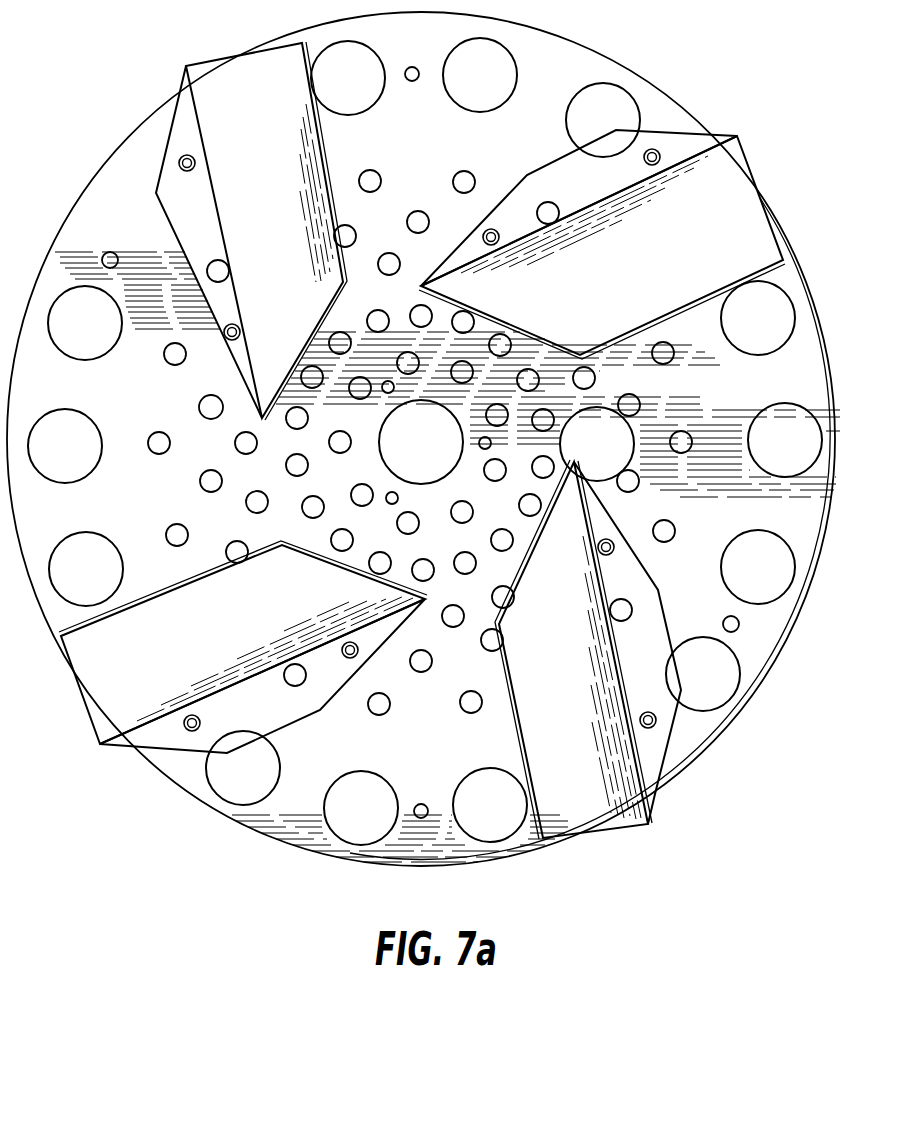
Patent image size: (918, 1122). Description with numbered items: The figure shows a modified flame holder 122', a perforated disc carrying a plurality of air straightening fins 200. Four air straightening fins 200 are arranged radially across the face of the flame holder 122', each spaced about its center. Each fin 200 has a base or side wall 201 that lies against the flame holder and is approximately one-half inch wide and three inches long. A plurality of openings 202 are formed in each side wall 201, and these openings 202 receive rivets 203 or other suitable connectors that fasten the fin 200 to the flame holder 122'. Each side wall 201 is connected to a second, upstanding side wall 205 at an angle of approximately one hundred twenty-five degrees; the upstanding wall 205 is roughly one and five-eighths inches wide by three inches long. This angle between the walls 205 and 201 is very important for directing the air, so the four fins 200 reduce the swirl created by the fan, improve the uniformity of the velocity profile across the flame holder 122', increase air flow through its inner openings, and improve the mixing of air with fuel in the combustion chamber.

The flame holder 122' is at (423, 438).
The air straightening fin 200 is at (219, 48).
The base or side wall 201 is at (182, 120).
The opening 202 is at (179, 164).
The rivet 203 is at (184, 170).
The upstanding side wall 205 is at (279, 73).